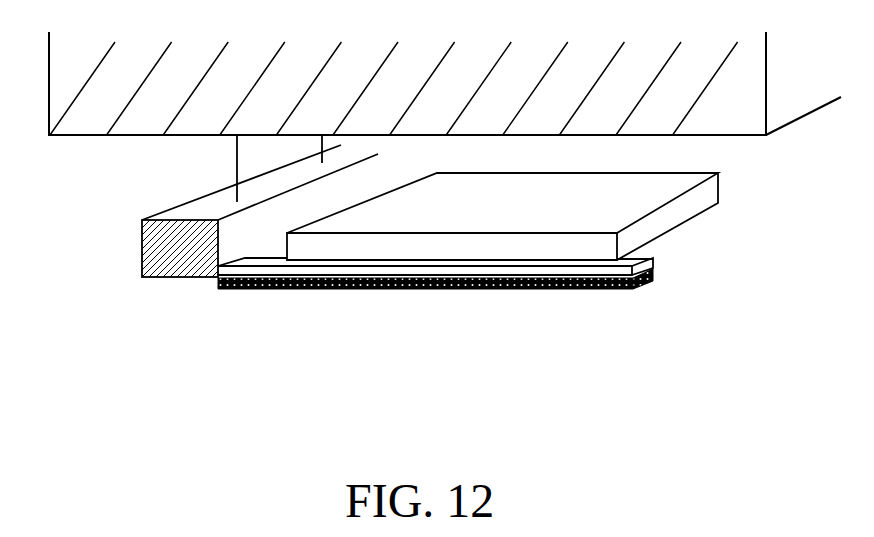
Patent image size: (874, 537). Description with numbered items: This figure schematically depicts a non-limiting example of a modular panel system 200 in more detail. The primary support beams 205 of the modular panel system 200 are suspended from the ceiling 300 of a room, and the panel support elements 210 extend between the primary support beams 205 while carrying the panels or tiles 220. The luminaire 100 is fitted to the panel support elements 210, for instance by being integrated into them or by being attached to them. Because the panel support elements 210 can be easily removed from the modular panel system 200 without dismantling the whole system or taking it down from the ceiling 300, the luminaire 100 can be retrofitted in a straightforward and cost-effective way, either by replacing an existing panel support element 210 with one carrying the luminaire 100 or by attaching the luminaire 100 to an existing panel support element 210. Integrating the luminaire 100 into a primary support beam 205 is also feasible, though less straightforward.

The luminaire 100 is at (635, 290).
The modular panel system 200 is at (118, 252).
The primary support beam 205 is at (174, 262).
The panel support element 210 is at (513, 271).
The panel or tile 220 is at (702, 202).
The ceiling 300 is at (68, 125).